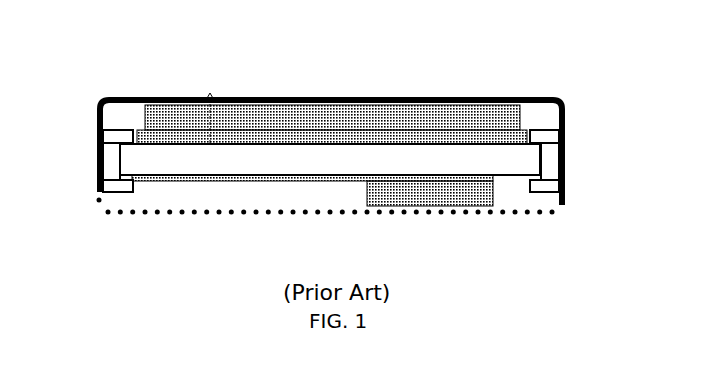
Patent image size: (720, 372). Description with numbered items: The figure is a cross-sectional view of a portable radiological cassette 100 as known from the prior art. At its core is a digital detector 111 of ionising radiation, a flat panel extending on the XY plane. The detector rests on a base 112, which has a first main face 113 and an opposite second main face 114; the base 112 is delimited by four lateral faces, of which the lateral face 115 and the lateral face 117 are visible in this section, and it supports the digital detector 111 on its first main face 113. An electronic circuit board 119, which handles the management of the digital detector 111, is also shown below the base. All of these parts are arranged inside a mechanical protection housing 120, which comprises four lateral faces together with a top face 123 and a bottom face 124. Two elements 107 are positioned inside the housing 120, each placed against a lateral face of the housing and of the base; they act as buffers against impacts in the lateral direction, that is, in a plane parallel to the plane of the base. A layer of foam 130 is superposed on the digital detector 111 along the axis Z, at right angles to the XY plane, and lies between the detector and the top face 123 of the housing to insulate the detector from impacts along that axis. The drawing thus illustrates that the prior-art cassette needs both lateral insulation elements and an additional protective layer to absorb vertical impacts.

The portable radiological cassette 100 is at (230, 31).
The element 107 is at (562, 118).
The digital detector 111 is at (184, 97).
The base 112 is at (290, 170).
The first main face 113 is at (545, 128).
The second main face 114 is at (175, 181).
The lateral face 115 is at (97, 155).
The lateral face 117 is at (566, 162).
The electronic circuit board 119 is at (483, 204).
The mechanical protection housing 120 is at (122, 97).
The top face 123 is at (286, 97).
The bottom face 124 is at (364, 214).
The layer of foam 130 is at (376, 97).